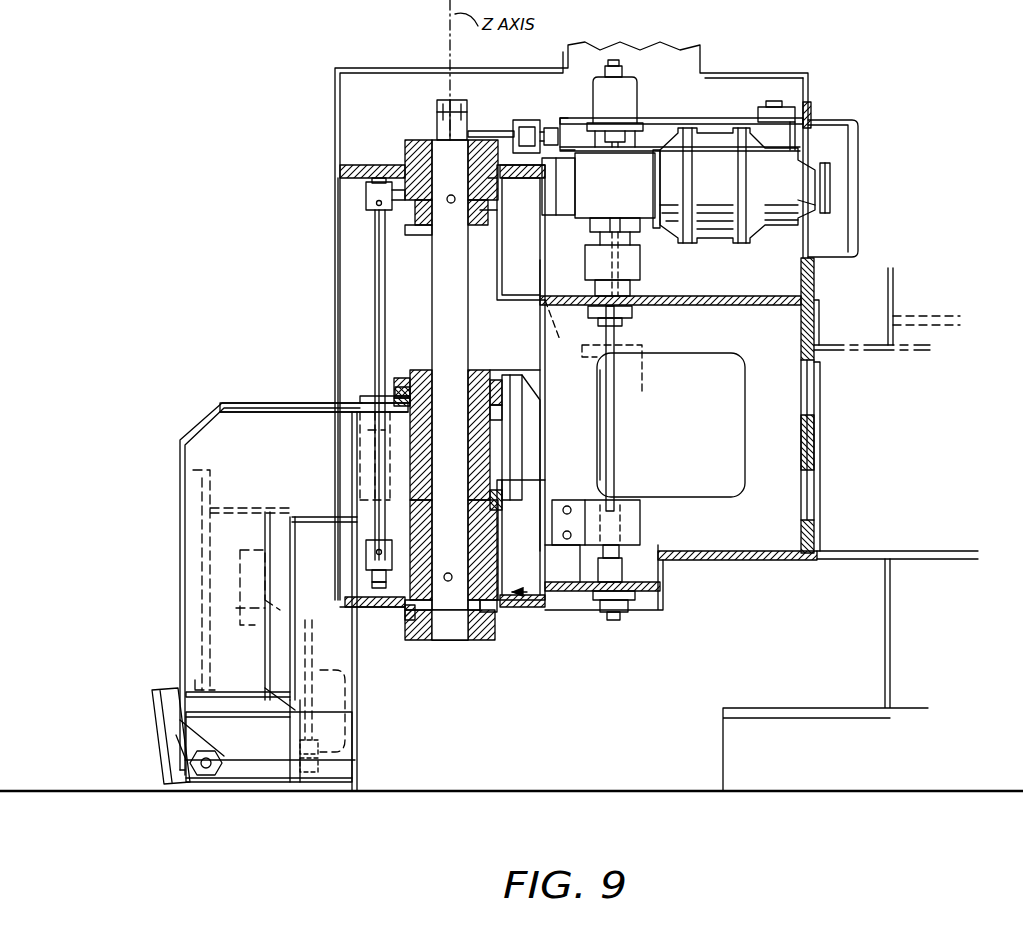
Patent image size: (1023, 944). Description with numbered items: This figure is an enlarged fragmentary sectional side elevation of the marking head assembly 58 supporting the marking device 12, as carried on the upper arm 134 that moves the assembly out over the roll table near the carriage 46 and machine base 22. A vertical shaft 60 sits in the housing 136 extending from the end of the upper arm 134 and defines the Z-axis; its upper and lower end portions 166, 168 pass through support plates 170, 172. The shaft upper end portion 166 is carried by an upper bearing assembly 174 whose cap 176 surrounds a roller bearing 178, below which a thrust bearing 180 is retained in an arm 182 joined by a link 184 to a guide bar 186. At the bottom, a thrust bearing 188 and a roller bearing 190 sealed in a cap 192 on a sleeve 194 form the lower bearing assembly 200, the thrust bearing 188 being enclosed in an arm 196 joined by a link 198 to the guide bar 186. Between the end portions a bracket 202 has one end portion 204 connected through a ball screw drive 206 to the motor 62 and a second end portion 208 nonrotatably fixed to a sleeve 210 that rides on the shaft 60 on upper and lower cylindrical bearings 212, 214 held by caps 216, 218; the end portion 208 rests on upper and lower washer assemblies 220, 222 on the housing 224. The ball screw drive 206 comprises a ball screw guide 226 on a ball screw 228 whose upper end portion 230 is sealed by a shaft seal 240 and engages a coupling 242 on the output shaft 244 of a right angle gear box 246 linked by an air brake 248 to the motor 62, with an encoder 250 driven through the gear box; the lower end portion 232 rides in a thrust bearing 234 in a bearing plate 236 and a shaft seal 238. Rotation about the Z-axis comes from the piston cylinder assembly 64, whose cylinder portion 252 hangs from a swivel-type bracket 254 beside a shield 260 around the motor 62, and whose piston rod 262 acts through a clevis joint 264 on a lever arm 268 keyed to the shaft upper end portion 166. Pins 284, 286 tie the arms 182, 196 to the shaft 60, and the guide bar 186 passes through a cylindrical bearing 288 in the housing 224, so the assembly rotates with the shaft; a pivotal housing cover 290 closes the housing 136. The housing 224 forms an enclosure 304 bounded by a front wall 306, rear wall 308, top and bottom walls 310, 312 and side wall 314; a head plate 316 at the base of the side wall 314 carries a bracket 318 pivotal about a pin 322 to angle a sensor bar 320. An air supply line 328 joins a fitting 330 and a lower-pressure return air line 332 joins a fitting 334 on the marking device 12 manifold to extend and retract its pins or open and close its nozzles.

The marking device 12 is at (292, 792).
The machine bed 22 is at (723, 730).
The carriage 46 is at (905, 290).
The marking head assembly 58 is at (238, 385).
The shaft 60 is at (438, 282).
The motor 62 is at (832, 180).
The piston cylinder assembly 64 is at (665, 110).
The upper arm 134 is at (850, 352).
The housing 136 is at (335, 300).
The shaft upper end portion 166 is at (440, 150).
The shaft lower end portion 168 is at (472, 635).
The support plate 170 is at (360, 168).
The support plate 172 is at (505, 615).
The upper bearing assembly 174 is at (395, 140).
The cap 176 is at (395, 140).
The roller bearing 178 is at (498, 165).
The thrust bearing 180 is at (488, 200).
The arm 182 is at (405, 210).
The link 184 is at (405, 190).
The guide bar 186 is at (372, 223).
The thrust bearing 188 is at (355, 602).
The roller bearing 190 is at (412, 618).
The cap 192 is at (450, 640).
The sleeve 194 is at (495, 640).
The arm 196 is at (490, 580).
The link 198 is at (372, 575).
The bearing assembly 200 is at (530, 600).
The bracket 202 is at (548, 275).
The bracket end portion 204 is at (520, 440).
The ball screw drive 206 is at (660, 510).
The bracket end portion 208 is at (398, 378).
The sleeve 210 is at (500, 410).
The cylindrical bearing 212 is at (505, 392).
The cylindrical bearing 214 is at (490, 520).
The cap 216 is at (478, 372).
The cap 218 is at (372, 548).
The upper washer assembly 220 is at (395, 395).
The lower washer assembly 222 is at (500, 522).
The housing 224 is at (200, 425).
The ball screw guide 226 is at (640, 360).
The ball screw 228 is at (615, 425).
The ball screw upper end portion 230 is at (622, 322).
The ball screw lower end portion 232 is at (604, 562).
The thrust bearing 234 is at (615, 576).
The bearing plate 236 is at (660, 576).
The shaft seal 238 is at (630, 605).
The shaft seal 240 is at (650, 300).
The coupling 242 is at (645, 275).
The output shaft 244 is at (625, 235).
The right angle gear box 246 is at (630, 190).
The air brake 248 is at (710, 245).
The encoder 250 is at (636, 95).
The cylinder portion 252 is at (726, 120).
The swivel-type bracket 254 is at (795, 108).
The shield 260 is at (858, 208).
The piston rod 262 is at (555, 125).
The clevis joint 264 is at (527, 118).
The lever arm 268 is at (492, 132).
The pin 284 is at (452, 203).
The pin 286 is at (448, 572).
The cylindrical bearing 288 is at (355, 450).
The housing cover 290 is at (335, 68).
The enclosure 304 is at (192, 542).
The front wall 306 is at (185, 525).
The rear wall 308 is at (340, 670).
The top wall 310 is at (320, 403).
The bottom wall 312 is at (273, 785).
The side wall 314 is at (352, 755).
The head plate 316 is at (250, 775).
The bracket 318 is at (180, 784).
The sensor bar 320 is at (162, 762).
The pin 322 is at (215, 755).
The air supply line 328 is at (340, 706).
The fitting 330 is at (318, 775).
The return air line 332 is at (300, 635).
The fitting 334 is at (330, 736).